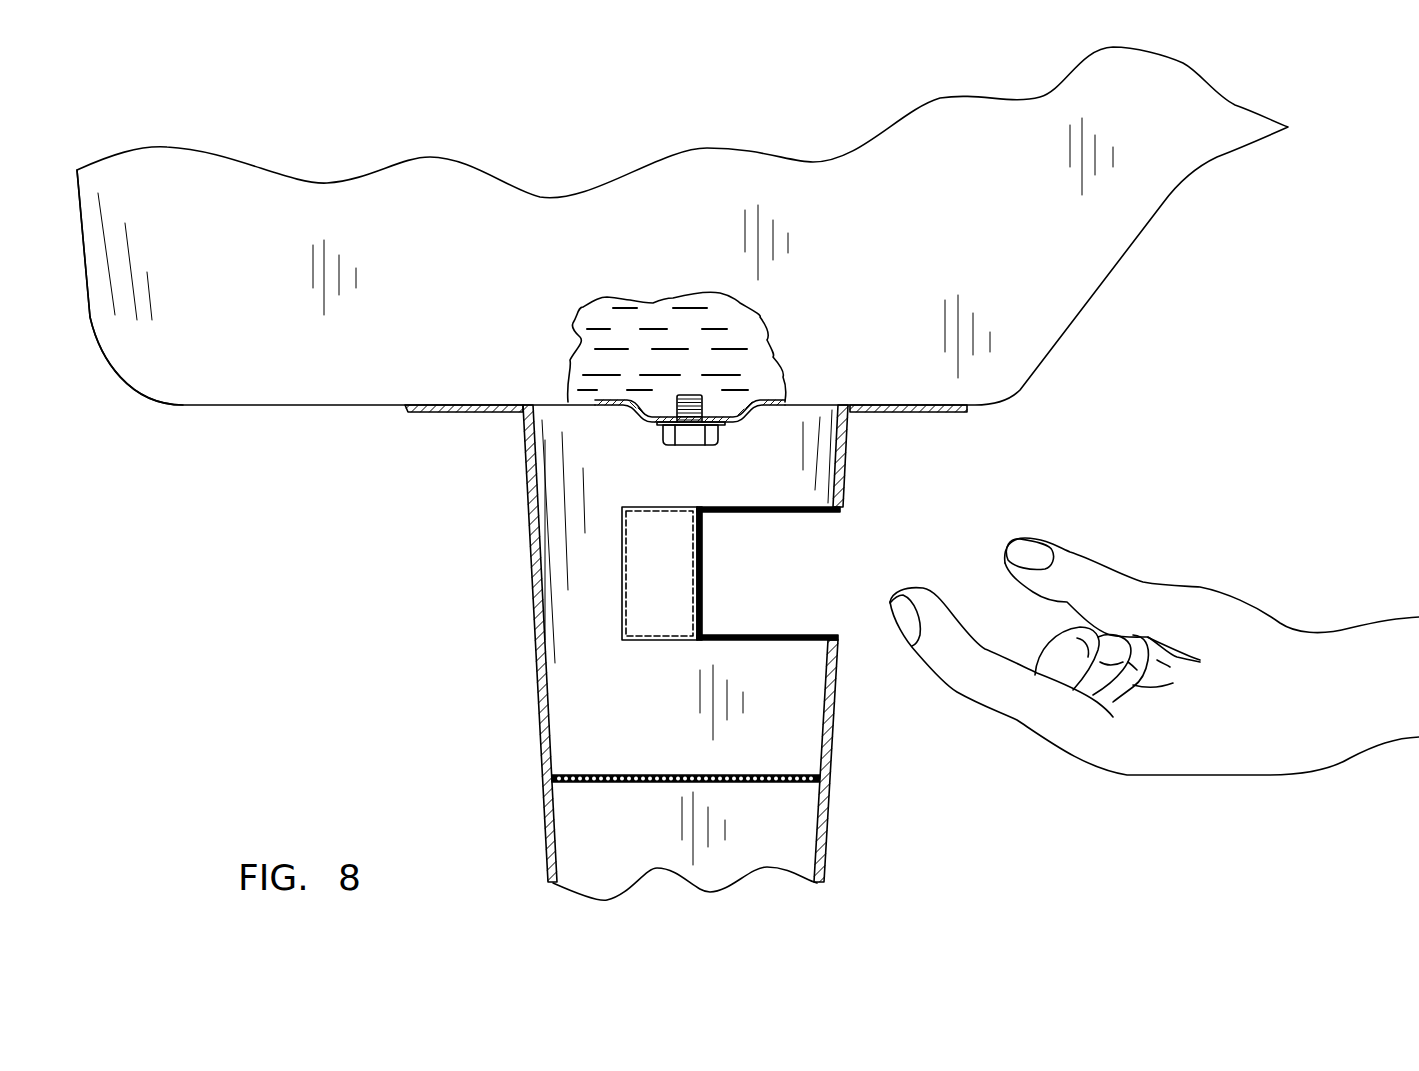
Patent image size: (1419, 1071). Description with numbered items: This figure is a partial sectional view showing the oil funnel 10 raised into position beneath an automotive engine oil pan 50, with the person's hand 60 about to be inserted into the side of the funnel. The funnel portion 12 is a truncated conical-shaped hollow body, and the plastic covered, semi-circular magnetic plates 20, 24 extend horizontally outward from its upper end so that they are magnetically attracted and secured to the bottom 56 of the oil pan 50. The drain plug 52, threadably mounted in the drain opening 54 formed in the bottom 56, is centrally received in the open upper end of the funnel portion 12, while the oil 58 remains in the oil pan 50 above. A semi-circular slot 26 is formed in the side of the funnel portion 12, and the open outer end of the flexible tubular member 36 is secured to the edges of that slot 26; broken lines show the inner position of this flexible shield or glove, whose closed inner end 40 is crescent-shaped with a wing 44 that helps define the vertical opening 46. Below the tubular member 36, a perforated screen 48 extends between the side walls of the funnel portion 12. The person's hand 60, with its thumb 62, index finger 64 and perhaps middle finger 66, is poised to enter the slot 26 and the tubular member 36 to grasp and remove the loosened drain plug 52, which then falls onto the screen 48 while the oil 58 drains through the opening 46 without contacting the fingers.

The oil funnel 10 is at (507, 588).
The funnel portion 12 is at (542, 792).
The magnetic plate 20 is at (455, 413).
The magnetic plate 24 is at (945, 413).
The slot 26 is at (873, 570).
The flexible tubular member 36 is at (767, 515).
The inner end 40 is at (700, 572).
The wing 44 is at (653, 507).
The vertical opening 46 is at (583, 553).
The perforated screen 48 is at (757, 775).
The oil pan 50 is at (1053, 280).
The drain plug 52 is at (685, 436).
The drain opening 54 is at (707, 418).
The bottom 56 is at (277, 403).
The oil 58 is at (683, 327).
The person's hand 60 is at (1265, 590).
The thumb 62 is at (1142, 582).
The index finger 64 is at (1030, 722).
The middle finger 66 is at (1065, 654).